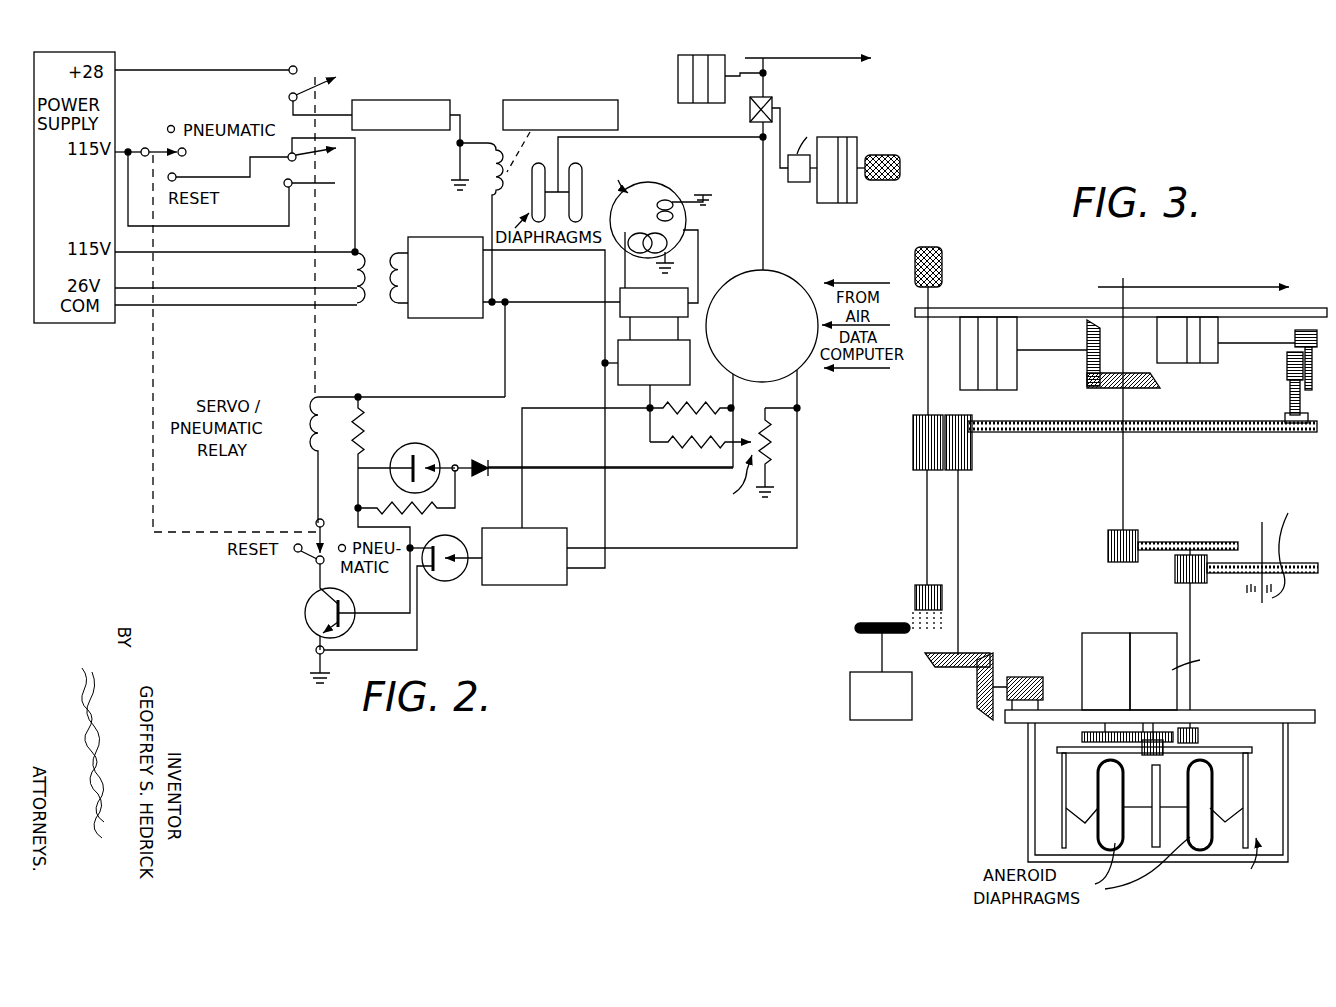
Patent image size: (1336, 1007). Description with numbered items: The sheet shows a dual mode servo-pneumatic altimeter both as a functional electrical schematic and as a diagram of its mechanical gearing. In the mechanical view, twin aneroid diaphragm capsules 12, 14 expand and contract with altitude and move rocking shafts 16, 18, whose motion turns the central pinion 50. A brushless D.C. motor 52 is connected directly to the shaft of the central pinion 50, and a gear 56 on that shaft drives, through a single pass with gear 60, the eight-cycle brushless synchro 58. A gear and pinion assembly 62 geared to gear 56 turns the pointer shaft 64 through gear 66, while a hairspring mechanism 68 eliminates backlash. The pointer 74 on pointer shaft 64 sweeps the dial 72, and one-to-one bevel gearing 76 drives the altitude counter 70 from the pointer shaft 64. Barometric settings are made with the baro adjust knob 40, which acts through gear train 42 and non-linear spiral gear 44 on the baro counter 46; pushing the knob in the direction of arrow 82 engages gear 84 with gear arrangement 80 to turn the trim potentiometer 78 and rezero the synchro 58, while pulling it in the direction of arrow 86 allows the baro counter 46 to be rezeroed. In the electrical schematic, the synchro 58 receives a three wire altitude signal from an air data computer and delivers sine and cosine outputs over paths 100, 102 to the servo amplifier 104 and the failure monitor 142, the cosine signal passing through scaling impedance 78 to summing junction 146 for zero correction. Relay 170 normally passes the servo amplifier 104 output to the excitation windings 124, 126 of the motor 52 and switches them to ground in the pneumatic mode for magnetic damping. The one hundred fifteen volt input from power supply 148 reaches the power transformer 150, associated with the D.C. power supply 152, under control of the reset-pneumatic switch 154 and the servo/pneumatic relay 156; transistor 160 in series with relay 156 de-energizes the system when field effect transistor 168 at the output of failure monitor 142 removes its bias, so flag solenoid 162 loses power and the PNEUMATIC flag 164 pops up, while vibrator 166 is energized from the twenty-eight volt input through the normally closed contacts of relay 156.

In FIG. 2, the aneroid diaphragm capsule 12 is at (531, 201).
In FIG. 3, the aneroid diaphragm capsule 12 is at (1208, 782).
In FIG. 2, the aneroid diaphragm capsule 14 is at (582, 203).
In FIG. 3, the aneroid diaphragm capsule 14 is at (1103, 780).
In FIG. 3, the rocking shaft 16 is at (1248, 786).
In FIG. 3, the rocking shaft 18 is at (1062, 790).
In FIG. 2, the baro adjust knob 40 is at (880, 183).
In FIG. 3, the baro adjust knob 40 is at (943, 262).
In FIG. 3, the gear train 42 is at (1281, 385).
In FIG. 2, the non-linear spiral gear 44 is at (798, 148).
In FIG. 2, the baro counter 46 is at (824, 204).
In FIG. 3, the baro counter 46 is at (1177, 360).
In FIG. 3, the central pinion 50 is at (1165, 758).
In FIG. 3, the brushless D.C. motor 52 is at (1153, 638).
In FIG. 3, the gear 56 is at (1143, 723).
In FIG. 2, the multi-cycle brushless synchro 58 is at (745, 274).
In FIG. 3, the multi-cycle brushless synchro 58 is at (1082, 650).
In FIG. 3, the gear 60 is at (1082, 734).
In FIG. 3, the gear and pinion assembly 62 is at (1186, 600).
In FIG. 3, the pointer shaft 64 is at (1125, 466).
In FIG. 3, the gear 66 is at (1108, 530).
In FIG. 3, the hairspring mechanism 68 is at (1278, 594).
In FIG. 2, the altitude counter 70 is at (678, 66).
In FIG. 3, the altitude counter 70 is at (1010, 378).
In FIG. 3, the dial 72 is at (1058, 302).
In FIG. 2, the pointer 74 is at (773, 58).
In FIG. 3, the pointer 74 is at (1205, 286).
In FIG. 3, the bevel gearing 76 is at (1072, 373).
In FIG. 2, the trim potentiometer 78 is at (770, 446).
In FIG. 3, the trim potentiometer 78 is at (882, 719).
In FIG. 3, the gear arrangement 80 is at (903, 638).
In FIG. 3, the arrow 82 is at (915, 518).
In FIG. 3, the gear 84 is at (914, 592).
In FIG. 3, the arrow 86 is at (917, 371).
In FIG. 2, the path 100 is at (732, 383).
In FIG. 2, the path 102 is at (798, 408).
In FIG. 2, the servo amplifier 104 is at (618, 378).
In FIG. 2, the excitation winding 124 is at (690, 216).
In FIG. 2, the excitation winding 126 is at (628, 252).
In FIG. 2, the failure monitor 142 is at (547, 527).
In FIG. 2, the summing junction 146 is at (649, 412).
In FIG. 2, the power supply 148 is at (117, 85).
In FIG. 2, the power transformer 150 is at (379, 307).
In FIG. 2, the D.C. power supply 152 is at (430, 236).
In FIG. 2, the reset-pneumatic mode selection switch 154 is at (158, 148).
In FIG. 2, the servo/pneumatic relay 156 is at (356, 139).
In FIG. 2, the transistor 160 is at (306, 618).
In FIG. 2, the flag solenoid 162 is at (475, 222).
In FIG. 2, the PNEUMATIC flag 164 is at (582, 99).
In FIG. 2, the vibrator configuration 166 is at (430, 99).
In FIG. 2, the field effect transistor 168 is at (447, 582).
In FIG. 2, the relay 170 is at (618, 304).